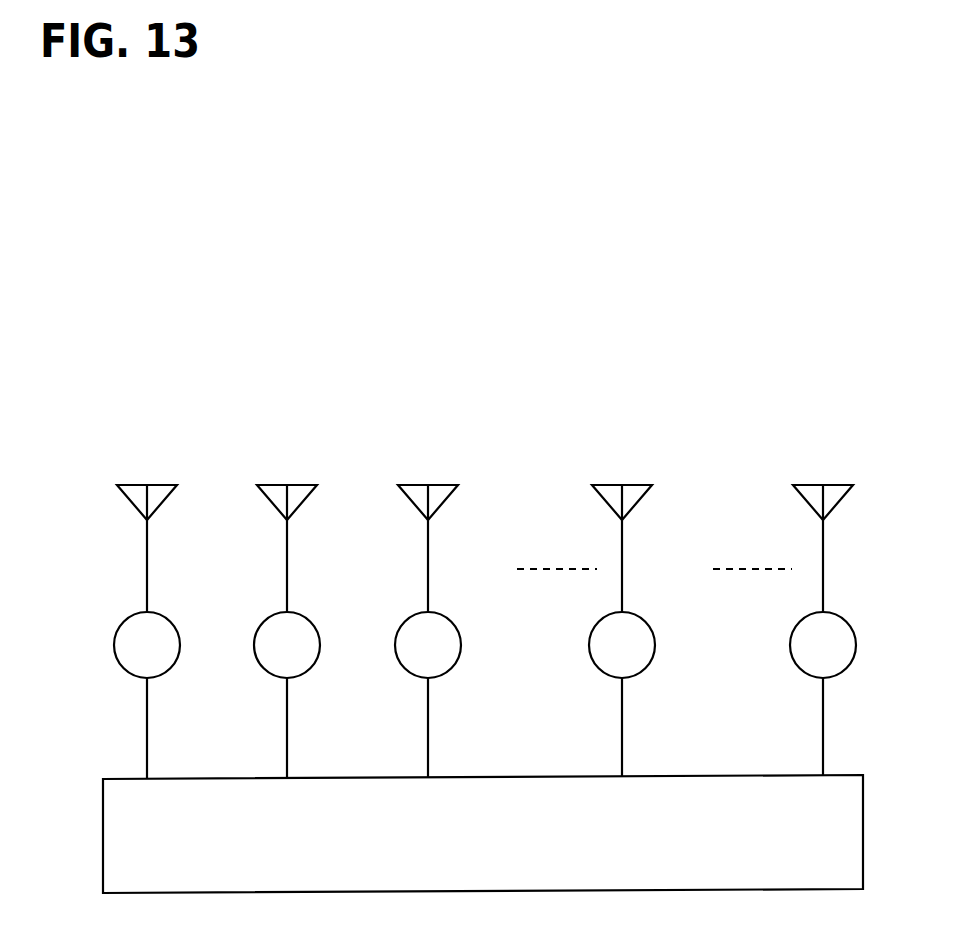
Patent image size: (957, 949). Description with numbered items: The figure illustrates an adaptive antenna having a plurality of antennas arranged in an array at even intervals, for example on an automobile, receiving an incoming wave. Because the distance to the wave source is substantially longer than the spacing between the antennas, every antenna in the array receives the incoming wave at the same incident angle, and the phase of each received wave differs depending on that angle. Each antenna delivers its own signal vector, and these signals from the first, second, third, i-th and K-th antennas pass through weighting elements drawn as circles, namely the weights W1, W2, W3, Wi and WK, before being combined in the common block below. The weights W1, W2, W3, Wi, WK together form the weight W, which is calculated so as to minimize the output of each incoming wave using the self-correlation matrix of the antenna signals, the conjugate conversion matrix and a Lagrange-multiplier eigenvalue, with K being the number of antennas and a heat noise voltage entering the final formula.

The weight for first antenna W1 is at (160, 695).
The weight for second antenna W2 is at (300, 695).
The weight for third antenna W3 is at (441, 694).
The weight for i-th antenna Wi is at (632, 694).
The weight for K-th antenna WK is at (836, 693).